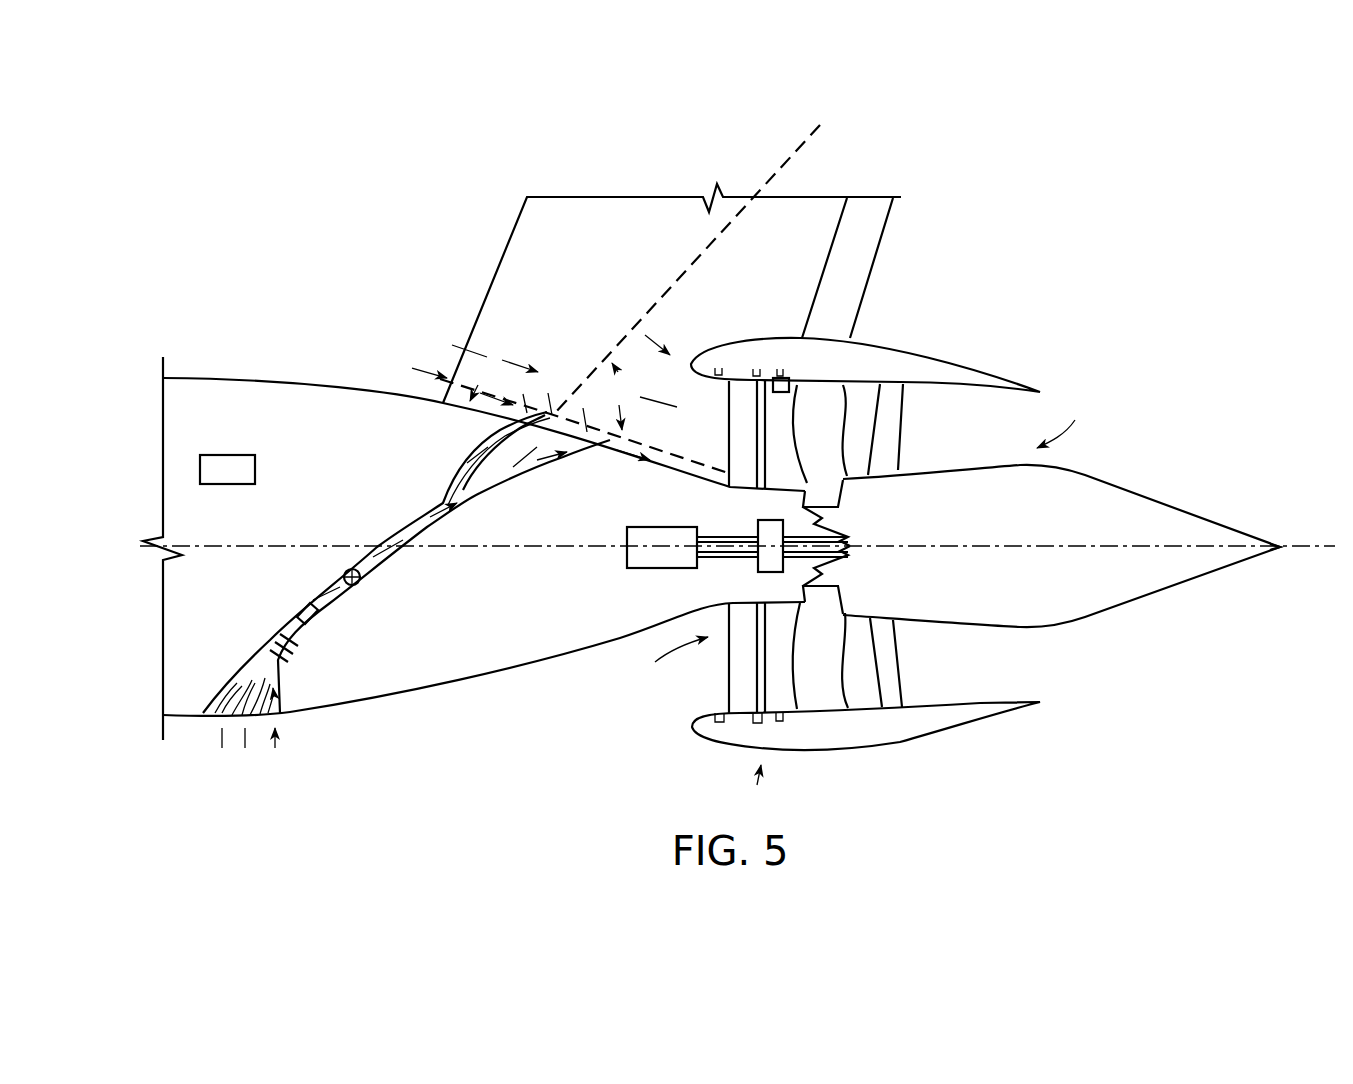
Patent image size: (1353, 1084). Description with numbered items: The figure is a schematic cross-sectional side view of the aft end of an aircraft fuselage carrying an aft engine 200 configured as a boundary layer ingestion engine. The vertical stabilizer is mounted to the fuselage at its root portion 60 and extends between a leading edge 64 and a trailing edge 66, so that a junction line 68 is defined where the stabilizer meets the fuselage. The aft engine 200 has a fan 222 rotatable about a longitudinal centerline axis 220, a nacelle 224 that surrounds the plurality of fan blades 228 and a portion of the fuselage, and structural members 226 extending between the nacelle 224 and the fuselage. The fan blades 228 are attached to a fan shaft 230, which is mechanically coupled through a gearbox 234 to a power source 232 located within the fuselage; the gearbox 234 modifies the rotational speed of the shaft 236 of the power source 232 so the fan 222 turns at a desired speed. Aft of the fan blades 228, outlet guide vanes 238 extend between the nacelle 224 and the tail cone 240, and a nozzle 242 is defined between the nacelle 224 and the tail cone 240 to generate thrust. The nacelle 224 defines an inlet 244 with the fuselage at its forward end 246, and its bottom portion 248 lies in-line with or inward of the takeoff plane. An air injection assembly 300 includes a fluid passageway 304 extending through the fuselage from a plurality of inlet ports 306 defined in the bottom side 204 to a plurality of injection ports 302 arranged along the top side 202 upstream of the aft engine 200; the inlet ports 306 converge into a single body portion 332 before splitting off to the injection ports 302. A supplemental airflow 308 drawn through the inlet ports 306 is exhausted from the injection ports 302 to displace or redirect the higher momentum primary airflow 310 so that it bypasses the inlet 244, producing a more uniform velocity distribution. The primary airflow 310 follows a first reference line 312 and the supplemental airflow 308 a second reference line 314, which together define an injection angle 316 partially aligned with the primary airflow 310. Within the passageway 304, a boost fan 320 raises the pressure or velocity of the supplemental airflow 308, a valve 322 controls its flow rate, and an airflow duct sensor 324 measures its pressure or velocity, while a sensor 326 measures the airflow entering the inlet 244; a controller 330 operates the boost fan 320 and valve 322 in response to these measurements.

The root portion 60 is at (455, 398).
The leading edge 64 is at (500, 236).
The trailing edge 66 is at (895, 228).
The junction line 68 is at (440, 382).
The aft engine 200 is at (1065, 325).
The top side 202 is at (185, 366).
The bottom side 204 is at (183, 741).
The longitudinal centerline axis 220 is at (1285, 546).
The fan 222 is at (828, 410).
The nacelle 224 is at (830, 756).
The structural members 226 is at (737, 690).
The fan blades 228 is at (826, 442).
The fan shaft 230 is at (850, 556).
The power source 232 is at (627, 552).
The gearbox 234 is at (758, 524).
The shaft 236 is at (718, 556).
The outlet guide vanes 238 is at (905, 680).
The tail cone 240 is at (1140, 602).
The nozzle 242 is at (1073, 414).
The inlet 244 is at (663, 671).
The forward end 246 is at (650, 340).
The bottom portion 248 is at (722, 786).
The air injection assembly 300 is at (341, 511).
The injection ports 302 is at (600, 422).
The fluid passageway 304 is at (333, 570).
The inlet ports 306 is at (275, 750).
The supplemental airflow 308 is at (452, 522).
The primary airflow 310 is at (502, 390).
The first reference line 312 is at (490, 380).
The second reference line 314 is at (772, 160).
The injection angle 316 is at (627, 413).
The boost fan 320 is at (292, 664).
The valve 322 is at (358, 585).
The airflow duct sensor 324 is at (296, 610).
The sensor 326 is at (780, 378).
The controller 330 is at (200, 468).
The single body portion 332 is at (400, 521).